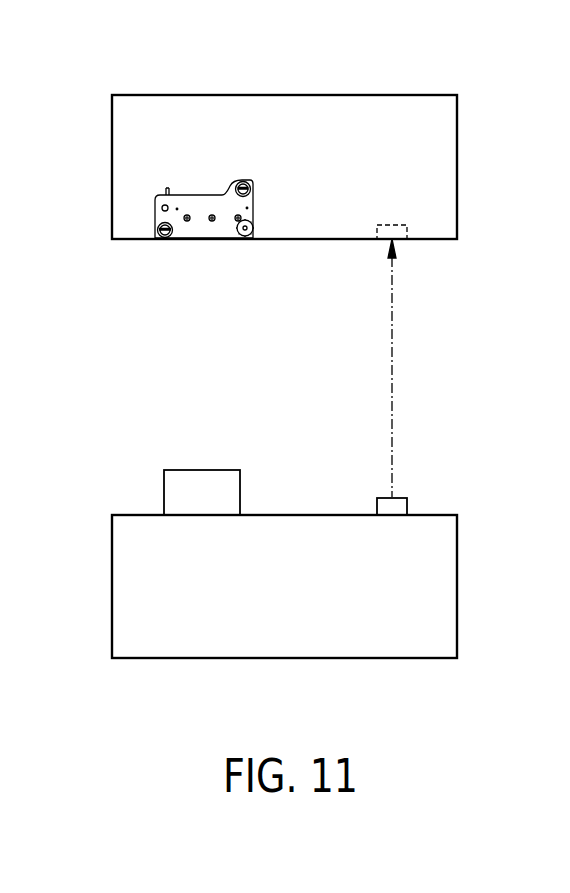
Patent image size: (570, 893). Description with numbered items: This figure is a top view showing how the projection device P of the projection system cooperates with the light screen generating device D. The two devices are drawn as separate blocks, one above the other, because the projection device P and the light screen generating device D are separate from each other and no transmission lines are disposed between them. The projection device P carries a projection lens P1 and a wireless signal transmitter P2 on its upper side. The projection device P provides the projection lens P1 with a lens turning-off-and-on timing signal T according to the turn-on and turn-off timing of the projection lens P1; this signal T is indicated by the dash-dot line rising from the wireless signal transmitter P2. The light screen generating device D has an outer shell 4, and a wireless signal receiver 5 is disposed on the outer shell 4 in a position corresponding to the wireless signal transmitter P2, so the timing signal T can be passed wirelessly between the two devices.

The outer shell 4 is at (258, 95).
The light screen generating device D is at (244, 124).
The wireless signal receiver 5 is at (407, 225).
The lens turning-off-and-on timing signal T is at (395, 393).
The projection lens P1 is at (176, 495).
The wireless signal transmitter P2 is at (400, 507).
The projection device P is at (465, 611).